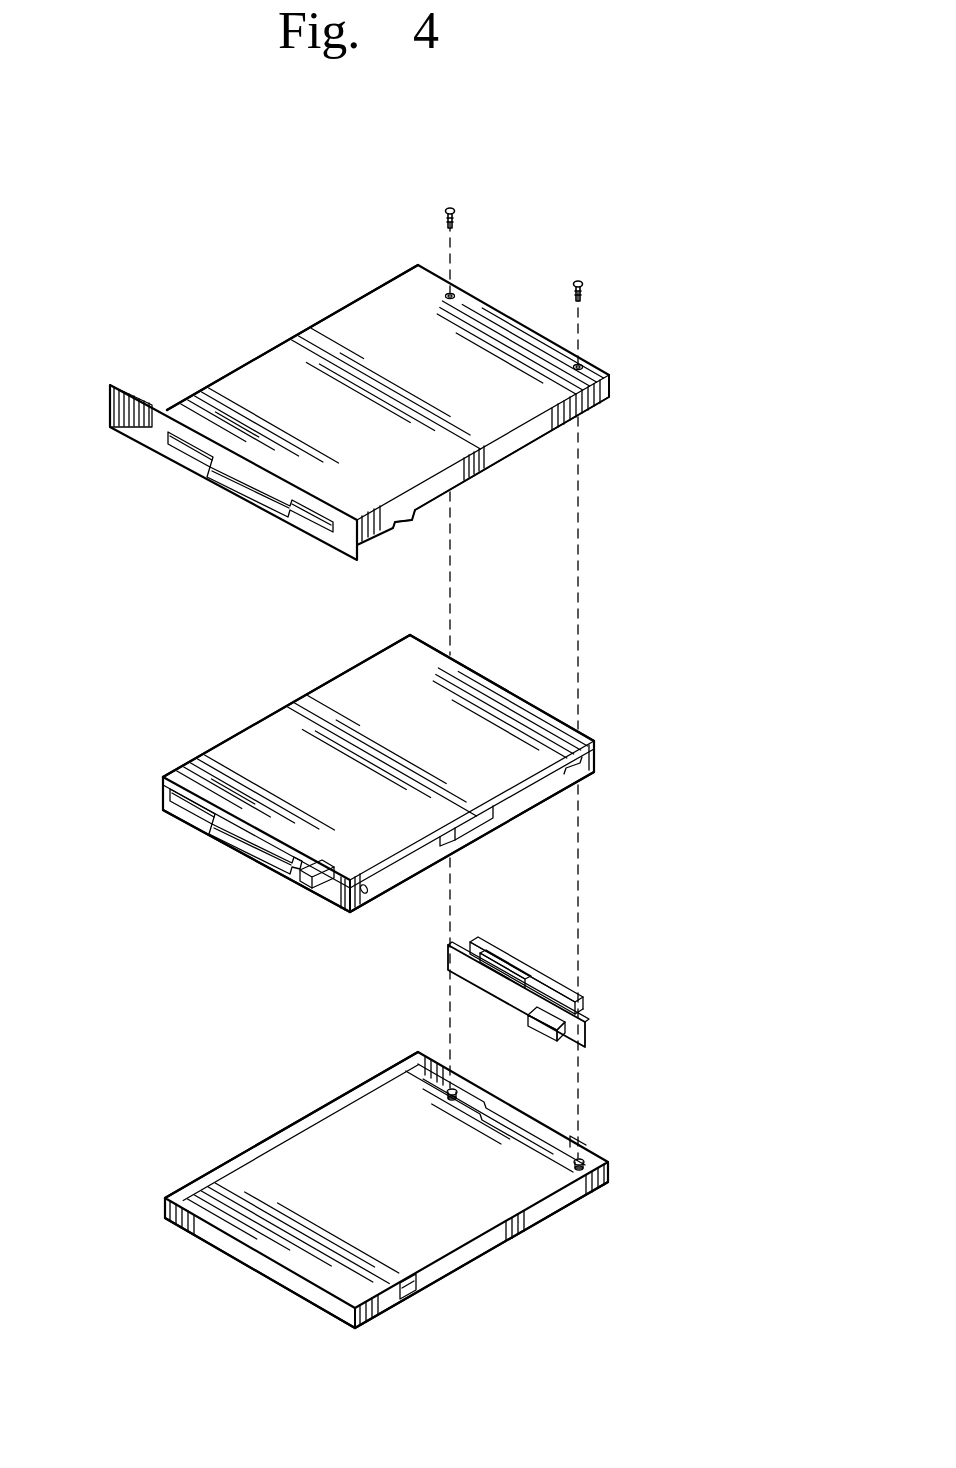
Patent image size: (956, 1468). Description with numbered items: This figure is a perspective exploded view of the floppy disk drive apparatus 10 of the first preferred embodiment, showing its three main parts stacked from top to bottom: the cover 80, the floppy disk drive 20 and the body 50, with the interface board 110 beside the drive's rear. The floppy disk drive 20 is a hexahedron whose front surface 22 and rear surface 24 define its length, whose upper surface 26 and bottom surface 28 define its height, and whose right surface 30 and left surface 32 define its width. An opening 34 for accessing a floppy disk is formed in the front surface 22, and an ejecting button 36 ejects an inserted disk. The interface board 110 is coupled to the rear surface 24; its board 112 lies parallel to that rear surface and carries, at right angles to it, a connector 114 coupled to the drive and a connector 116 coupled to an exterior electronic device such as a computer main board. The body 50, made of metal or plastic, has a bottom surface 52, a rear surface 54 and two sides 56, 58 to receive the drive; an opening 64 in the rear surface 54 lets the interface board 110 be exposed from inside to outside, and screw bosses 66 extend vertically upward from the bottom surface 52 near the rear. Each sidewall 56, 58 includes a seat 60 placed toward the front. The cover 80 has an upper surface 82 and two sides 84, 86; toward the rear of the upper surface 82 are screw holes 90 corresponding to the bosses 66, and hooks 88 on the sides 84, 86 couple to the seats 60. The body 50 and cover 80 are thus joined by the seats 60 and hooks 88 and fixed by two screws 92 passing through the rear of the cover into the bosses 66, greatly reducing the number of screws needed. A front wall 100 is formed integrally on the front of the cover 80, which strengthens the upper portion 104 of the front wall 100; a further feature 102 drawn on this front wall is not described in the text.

The floppy disk drive apparatus 10 is at (204, 183).
The floppy disk drive 20 is at (203, 735).
The front surface 22 is at (335, 898).
The rear surface 24 is at (533, 702).
The upper surface 26 is at (347, 688).
The bottom surface 28 is at (185, 822).
The right surface 30 is at (538, 788).
The left surface 32 is at (282, 703).
The opening 34 is at (253, 842).
The ejecting button 36 is at (297, 880).
The body 50 is at (180, 1237).
The bottom surface 52 is at (285, 1272).
The rear surface 54 is at (595, 1142).
The side 56 is at (492, 1242).
The side 58 is at (282, 1128).
The seat 60 is at (413, 1293).
The opening 64 is at (532, 1118).
The screw boss 66 is at (577, 1165).
The cover 80 is at (190, 364).
The upper surface 82 is at (267, 370).
The side 84 is at (500, 452).
The side 86 is at (323, 317).
The hook 88 is at (412, 520).
The screw hole 90 is at (455, 293).
The screw 92 is at (452, 205).
The front wall 100 is at (138, 428).
The slot 102 is at (232, 472).
The upper portion 104 is at (270, 478).
The interface board 110 is at (445, 957).
The board 112 is at (590, 1017).
The connector 114 is at (568, 1038).
The connector 116 is at (507, 943).